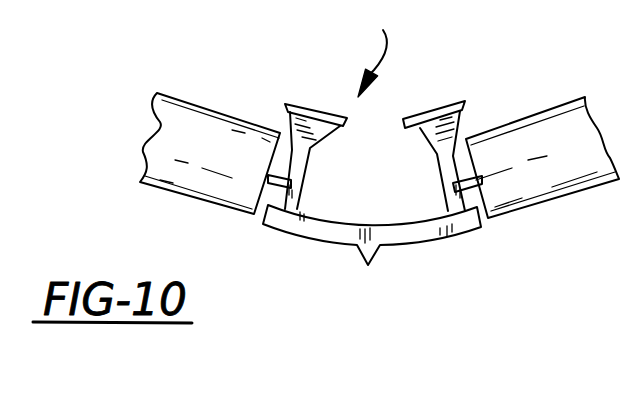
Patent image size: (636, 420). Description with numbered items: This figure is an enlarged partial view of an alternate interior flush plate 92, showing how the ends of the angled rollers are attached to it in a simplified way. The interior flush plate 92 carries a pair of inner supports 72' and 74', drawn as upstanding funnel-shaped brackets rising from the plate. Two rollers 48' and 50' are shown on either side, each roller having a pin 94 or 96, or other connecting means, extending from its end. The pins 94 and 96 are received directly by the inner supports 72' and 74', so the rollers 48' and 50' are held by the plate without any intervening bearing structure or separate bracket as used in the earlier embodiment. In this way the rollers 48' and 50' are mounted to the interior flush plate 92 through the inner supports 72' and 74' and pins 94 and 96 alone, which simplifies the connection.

The roller 48' is at (191, 171).
The roller 50' is at (542, 183).
The inner support 72' is at (307, 116).
The inner support 74' is at (434, 117).
The interior flush plate 92 is at (380, 49).
The pin 94 is at (272, 180).
The pin 96 is at (460, 185).